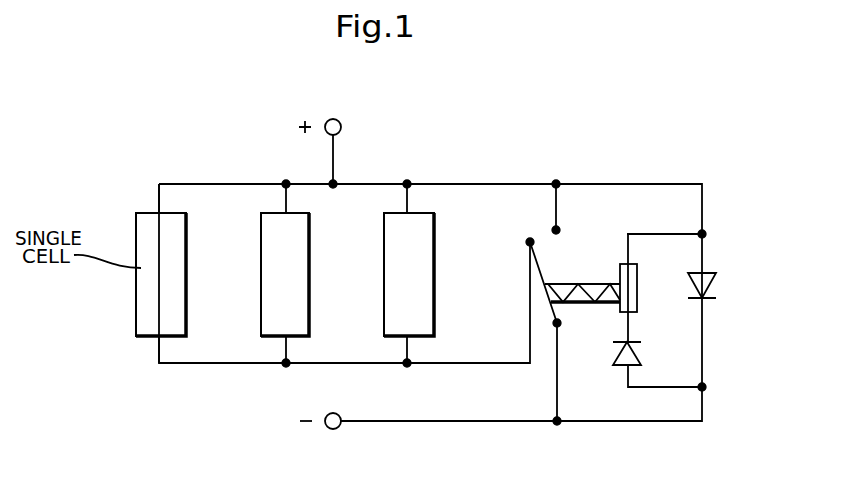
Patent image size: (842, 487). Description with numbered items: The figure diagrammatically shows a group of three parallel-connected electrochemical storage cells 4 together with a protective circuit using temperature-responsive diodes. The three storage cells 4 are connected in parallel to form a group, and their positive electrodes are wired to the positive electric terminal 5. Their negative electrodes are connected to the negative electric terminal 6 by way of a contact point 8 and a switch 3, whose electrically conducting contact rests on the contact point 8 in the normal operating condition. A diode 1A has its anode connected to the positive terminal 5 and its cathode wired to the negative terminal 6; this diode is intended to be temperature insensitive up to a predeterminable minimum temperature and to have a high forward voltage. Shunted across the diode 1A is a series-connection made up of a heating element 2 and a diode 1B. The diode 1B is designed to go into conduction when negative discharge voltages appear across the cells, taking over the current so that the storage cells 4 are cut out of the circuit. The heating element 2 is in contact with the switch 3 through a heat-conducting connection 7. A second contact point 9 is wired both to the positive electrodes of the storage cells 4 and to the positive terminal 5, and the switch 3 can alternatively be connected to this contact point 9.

The diode 1A is at (712, 283).
The diode 1B is at (641, 352).
The heating element 2 is at (637, 278).
The switch 3 is at (551, 314).
The electrochemical storage cell 4 is at (183, 281).
The positive electric terminal 5 is at (341, 127).
The negative electric terminal 6 is at (333, 429).
The heat-conducting connection 7 is at (583, 282).
The contact point 8 is at (527, 240).
The second contact point 9 is at (560, 228).